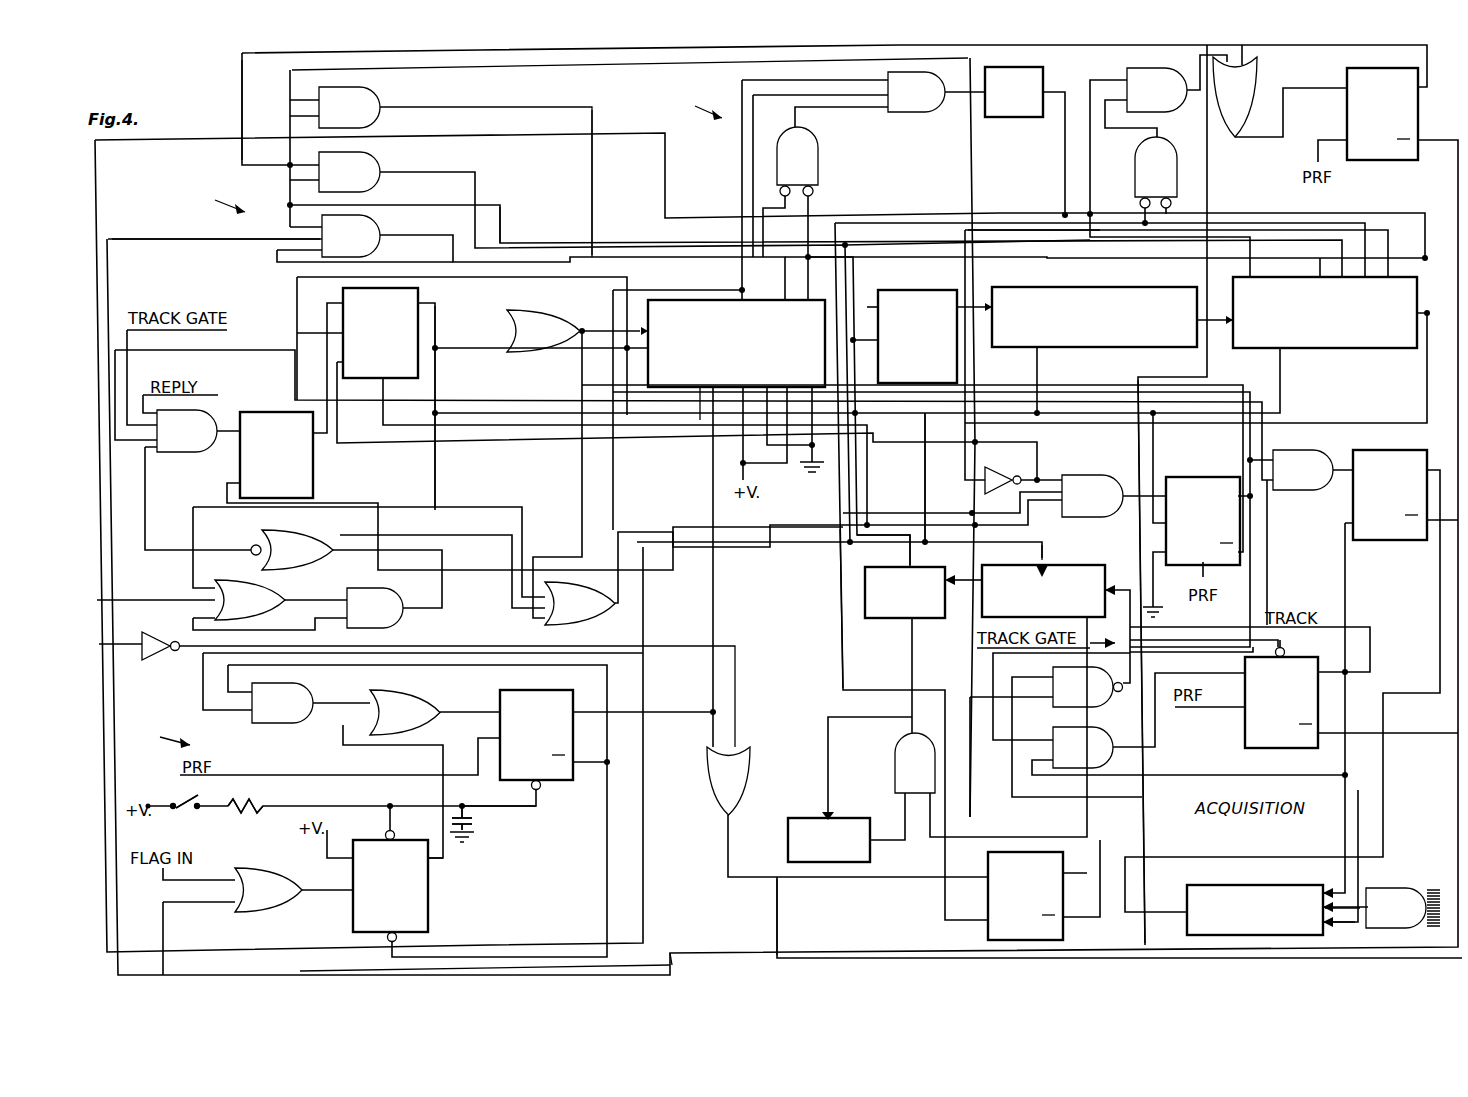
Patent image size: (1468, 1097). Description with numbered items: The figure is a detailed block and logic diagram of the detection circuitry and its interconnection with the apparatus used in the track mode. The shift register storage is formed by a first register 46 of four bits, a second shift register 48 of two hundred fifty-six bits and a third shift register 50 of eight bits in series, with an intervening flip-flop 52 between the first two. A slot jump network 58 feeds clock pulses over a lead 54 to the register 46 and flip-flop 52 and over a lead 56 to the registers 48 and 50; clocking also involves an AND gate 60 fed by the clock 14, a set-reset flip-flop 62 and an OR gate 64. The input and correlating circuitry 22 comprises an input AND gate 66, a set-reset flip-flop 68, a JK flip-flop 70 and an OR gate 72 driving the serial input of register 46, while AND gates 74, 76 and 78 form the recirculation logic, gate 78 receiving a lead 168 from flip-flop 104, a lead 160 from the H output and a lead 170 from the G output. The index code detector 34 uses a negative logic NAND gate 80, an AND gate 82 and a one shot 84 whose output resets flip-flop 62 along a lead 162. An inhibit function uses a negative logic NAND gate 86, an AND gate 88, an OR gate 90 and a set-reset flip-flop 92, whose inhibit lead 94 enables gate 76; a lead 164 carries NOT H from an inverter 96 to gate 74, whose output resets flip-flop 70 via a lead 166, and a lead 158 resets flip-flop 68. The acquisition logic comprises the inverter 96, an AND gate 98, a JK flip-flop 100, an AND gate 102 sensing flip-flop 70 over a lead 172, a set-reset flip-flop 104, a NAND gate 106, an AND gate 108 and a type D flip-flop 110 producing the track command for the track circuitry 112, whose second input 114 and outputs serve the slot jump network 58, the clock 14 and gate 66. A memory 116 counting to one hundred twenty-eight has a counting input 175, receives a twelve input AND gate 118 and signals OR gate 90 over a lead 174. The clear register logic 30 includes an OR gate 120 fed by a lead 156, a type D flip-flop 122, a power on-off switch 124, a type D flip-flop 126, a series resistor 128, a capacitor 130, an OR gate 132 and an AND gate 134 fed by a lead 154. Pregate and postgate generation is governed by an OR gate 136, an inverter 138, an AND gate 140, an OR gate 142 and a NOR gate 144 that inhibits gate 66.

The clock 14 is at (814, 812).
The input and correlating circuitry 22 is at (211, 207).
The clear register logic 30 is at (161, 739).
The index code detector 34 is at (694, 105).
The first register 46 is at (688, 290).
The second shift register 48 is at (1085, 350).
The third shift register 50 is at (1363, 356).
The flip-flop 52 is at (918, 292).
The lead 54 is at (900, 556).
The lead 56 is at (925, 480).
The slot jump network 58 is at (890, 630).
The AND gate 60 is at (895, 776).
The set-reset flip-flop 62 is at (988, 901).
The OR gate 64 is at (710, 795).
The input AND gate 66 is at (197, 458).
The set-reset flip-flop 68 is at (316, 470).
The JK flip-flop 70 is at (342, 294).
The OR gate 72 is at (535, 308).
The AND gate 74 is at (378, 96).
The AND gate 76 is at (378, 171).
The AND gate 78 is at (378, 234).
The negative logic NAND gate 80 is at (818, 154).
The AND gate 82 is at (928, 118).
The monostable multivibrator (one shot) 84 is at (1028, 122).
The negative logic NAND gate 86 is at (1160, 137).
The AND gate 88 is at (1154, 66).
The OR gate 90 is at (1258, 74).
The set-reset flip-flop 92 is at (1382, 66).
The inhibit lead 94 is at (243, 108).
The inverter 96 is at (994, 470).
The AND gate 98 is at (1100, 470).
The JK flip-flop 100 is at (1209, 478).
The AND gate 102 is at (1305, 452).
The set-reset flip-flop 104 is at (1398, 452).
The NAND gate 106 is at (1056, 708).
The AND gate 108 is at (1094, 736).
The type D flip-flop 110 is at (1246, 752).
The track circuitry 112 is at (1078, 566).
The second input 114 is at (1040, 562).
The memory 116 is at (1252, 886).
The AND gate 118 is at (1412, 887).
The OR gate 120 is at (275, 866).
The type D flip-flop 122 is at (430, 923).
The power on-off switch 124 is at (178, 802).
The type D flip-flop 126 is at (580, 798).
The series resistor 128 is at (262, 808).
The capacitor 130 is at (474, 826).
The OR gate 132 is at (430, 695).
The AND gate 134 is at (296, 728).
The OR gate 136 is at (586, 620).
The inverter 138 is at (133, 637).
The AND gate 140 is at (400, 614).
The OR gate 142 is at (236, 582).
The NOR gate 144 is at (256, 540).
The lead 154 is at (696, 642).
The lead 156 is at (710, 960).
The lead 158 is at (438, 474).
The lead 160 is at (510, 246).
The lead 162 is at (840, 620).
The lead 164 is at (527, 77).
The lead 166 is at (594, 190).
The lead 168 is at (142, 243).
The lead 170 is at (982, 262).
The lead 172 is at (690, 435).
The lead 174 is at (1144, 844).
The counting input 175 is at (1328, 928).